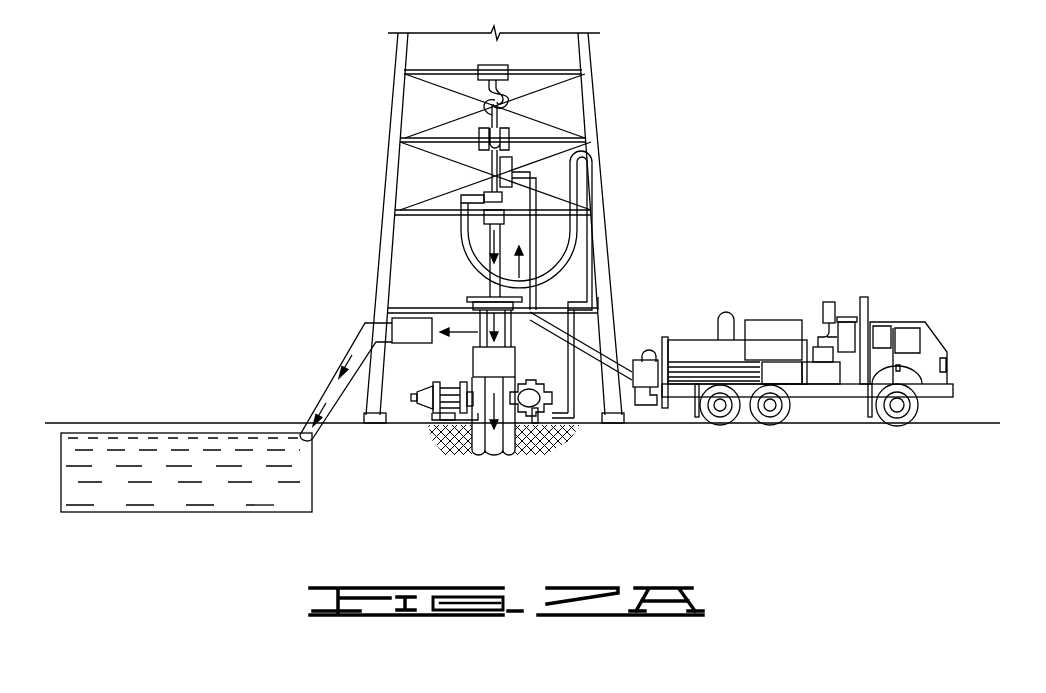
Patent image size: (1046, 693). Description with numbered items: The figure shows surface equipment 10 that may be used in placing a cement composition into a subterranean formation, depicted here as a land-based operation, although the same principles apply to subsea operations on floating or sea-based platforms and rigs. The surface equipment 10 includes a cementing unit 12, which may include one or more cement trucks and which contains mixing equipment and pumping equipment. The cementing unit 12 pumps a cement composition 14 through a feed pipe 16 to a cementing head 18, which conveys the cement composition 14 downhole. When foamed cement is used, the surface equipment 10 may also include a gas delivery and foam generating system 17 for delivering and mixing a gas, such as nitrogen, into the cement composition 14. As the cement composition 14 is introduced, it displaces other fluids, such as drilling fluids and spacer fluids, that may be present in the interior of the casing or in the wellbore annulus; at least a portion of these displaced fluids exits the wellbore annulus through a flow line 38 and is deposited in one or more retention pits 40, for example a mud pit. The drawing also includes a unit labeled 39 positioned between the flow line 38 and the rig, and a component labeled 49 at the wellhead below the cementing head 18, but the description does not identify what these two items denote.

The surface equipment 10 is at (300, 80).
The cementing unit 12 is at (820, 418).
The cement composition 14 is at (483, 238).
The feed pipe 16 is at (592, 343).
The gas delivery and foam generating system 17 is at (545, 440).
The cementing head 18 is at (542, 122).
The flow line 38 is at (322, 395).
The solids separator 39 is at (410, 317).
The retention pit 40 is at (177, 513).
The blowout preventer 49 is at (473, 362).